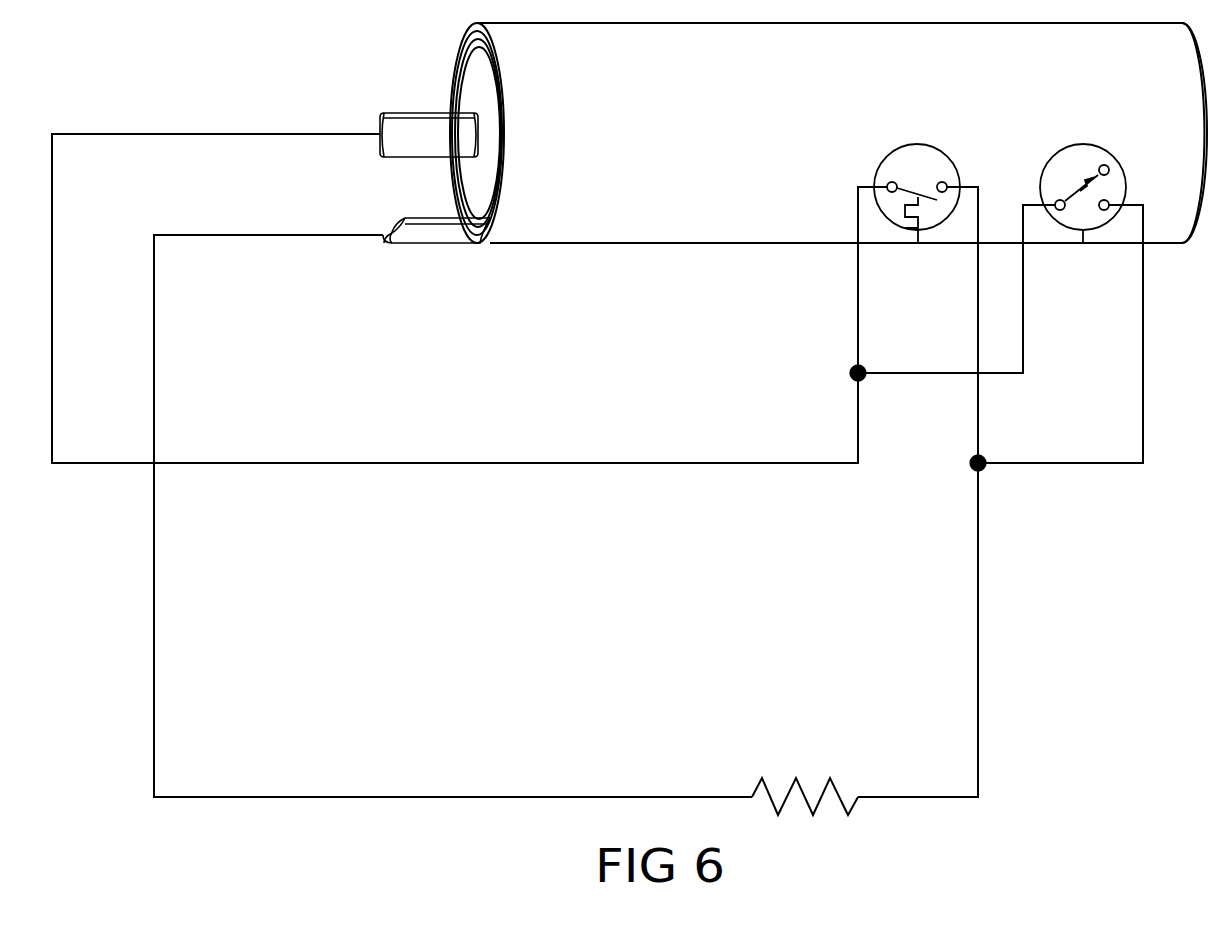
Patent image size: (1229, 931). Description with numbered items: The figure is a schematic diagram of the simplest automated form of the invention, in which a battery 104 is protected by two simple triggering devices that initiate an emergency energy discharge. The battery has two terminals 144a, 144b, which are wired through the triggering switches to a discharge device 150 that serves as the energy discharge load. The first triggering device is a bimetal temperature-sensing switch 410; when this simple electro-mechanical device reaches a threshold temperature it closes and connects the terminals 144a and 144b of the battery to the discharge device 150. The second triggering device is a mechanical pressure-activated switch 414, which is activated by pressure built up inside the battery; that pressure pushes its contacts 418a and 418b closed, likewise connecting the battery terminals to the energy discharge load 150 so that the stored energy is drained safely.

The heater housing / cylinder 104 is at (827, 23).
The battery terminal 144a is at (428, 113).
The battery terminal 144b is at (435, 243).
The bimetal temperature-sensing switch 410 is at (918, 243).
The pressure-activated switch 414 is at (1107, 198).
The contact 418a is at (1109, 201).
The contact 418b is at (1108, 167).
The discharge device 150 is at (805, 777).